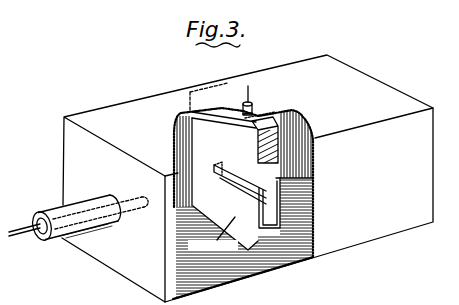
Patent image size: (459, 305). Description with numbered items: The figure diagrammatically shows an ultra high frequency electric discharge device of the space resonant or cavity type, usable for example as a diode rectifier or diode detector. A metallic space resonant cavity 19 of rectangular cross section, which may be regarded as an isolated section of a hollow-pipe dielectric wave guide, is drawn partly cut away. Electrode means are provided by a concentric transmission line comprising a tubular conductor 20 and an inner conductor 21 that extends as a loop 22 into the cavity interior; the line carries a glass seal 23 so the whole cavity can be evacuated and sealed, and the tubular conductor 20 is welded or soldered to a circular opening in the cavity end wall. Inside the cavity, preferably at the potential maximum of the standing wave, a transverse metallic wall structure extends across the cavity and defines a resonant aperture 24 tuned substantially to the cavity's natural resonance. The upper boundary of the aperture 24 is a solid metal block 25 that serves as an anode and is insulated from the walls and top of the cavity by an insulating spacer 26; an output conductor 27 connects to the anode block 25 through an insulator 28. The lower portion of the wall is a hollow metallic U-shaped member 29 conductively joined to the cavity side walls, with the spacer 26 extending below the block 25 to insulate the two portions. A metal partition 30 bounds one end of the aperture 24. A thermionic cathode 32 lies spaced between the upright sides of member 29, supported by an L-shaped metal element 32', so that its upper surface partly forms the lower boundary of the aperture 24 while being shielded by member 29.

The metallic space resonant cavity 19 is at (365, 83).
The tubular conductor 20 is at (47, 241).
The inner conductor 21 is at (25, 234).
The loop 22 is at (139, 199).
The glass seal 23 is at (56, 210).
The resonant aperture 24 is at (292, 182).
The solid metal block 25 is at (278, 137).
The insulating spacer 26 is at (261, 117).
The conductor 27 is at (249, 94).
The insulator 28 is at (243, 108).
The hollow metallic U-shaped member 29 is at (252, 230).
The metal partition 30 is at (211, 168).
The thermionic cathode 32 is at (300, 203).
The L-shaped metal element 32' is at (209, 178).